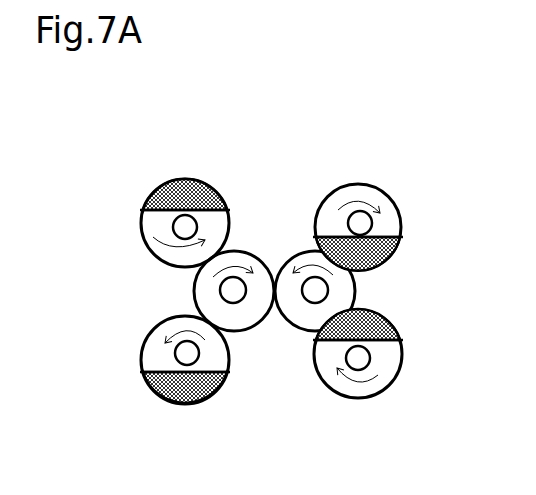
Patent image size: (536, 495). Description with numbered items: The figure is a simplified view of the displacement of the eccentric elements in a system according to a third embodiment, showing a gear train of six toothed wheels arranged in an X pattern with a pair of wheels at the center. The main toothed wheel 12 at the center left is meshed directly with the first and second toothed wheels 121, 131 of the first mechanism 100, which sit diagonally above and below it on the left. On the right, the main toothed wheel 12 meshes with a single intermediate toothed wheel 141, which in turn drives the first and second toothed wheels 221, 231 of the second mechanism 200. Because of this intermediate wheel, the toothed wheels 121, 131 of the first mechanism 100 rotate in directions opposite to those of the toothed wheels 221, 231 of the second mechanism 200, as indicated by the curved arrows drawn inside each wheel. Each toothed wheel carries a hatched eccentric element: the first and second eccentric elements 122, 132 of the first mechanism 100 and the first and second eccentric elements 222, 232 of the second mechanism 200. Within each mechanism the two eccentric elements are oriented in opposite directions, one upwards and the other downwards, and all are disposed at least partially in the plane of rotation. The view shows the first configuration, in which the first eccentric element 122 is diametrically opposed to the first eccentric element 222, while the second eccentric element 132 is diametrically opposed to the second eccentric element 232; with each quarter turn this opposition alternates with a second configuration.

The main toothed wheel 12 is at (233, 252).
The intermediate toothed wheel 141 is at (297, 250).
The first mechanism 100 is at (231, 397).
The second mechanism 200 is at (312, 397).
The first toothed wheel 121 is at (150, 240).
The first eccentric element 122 is at (163, 188).
The second toothed wheel 131 is at (154, 325).
The second eccentric element 132 is at (153, 383).
The first toothed wheel 221 is at (388, 196).
The first eccentric element 222 is at (392, 254).
The second toothed wheel 231 is at (390, 380).
The second eccentric element 232 is at (393, 322).